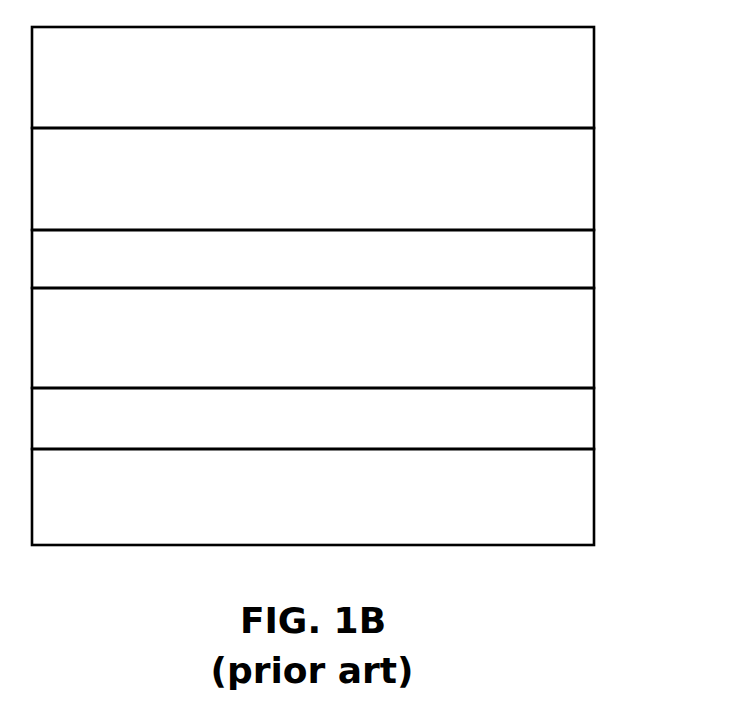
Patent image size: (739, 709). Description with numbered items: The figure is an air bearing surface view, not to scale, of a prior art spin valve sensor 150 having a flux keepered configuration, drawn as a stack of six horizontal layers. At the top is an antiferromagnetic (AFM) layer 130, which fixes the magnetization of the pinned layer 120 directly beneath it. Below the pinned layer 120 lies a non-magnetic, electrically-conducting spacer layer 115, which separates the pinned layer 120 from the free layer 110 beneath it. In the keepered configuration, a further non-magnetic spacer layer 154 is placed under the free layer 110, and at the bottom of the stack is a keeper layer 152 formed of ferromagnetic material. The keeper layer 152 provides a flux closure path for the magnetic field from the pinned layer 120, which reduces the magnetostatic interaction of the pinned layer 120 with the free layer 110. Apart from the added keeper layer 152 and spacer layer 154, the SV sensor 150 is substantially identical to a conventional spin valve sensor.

The antiferromagnetic (AFM) layer 130 is at (566, 113).
The pinned layer 120 is at (566, 197).
The spacer layer 115 is at (567, 269).
The free layer 110 is at (568, 356).
The spacer layer 154 is at (570, 425).
The keeper layer 152 is at (570, 521).
The SV sensor 150 is at (368, 346).